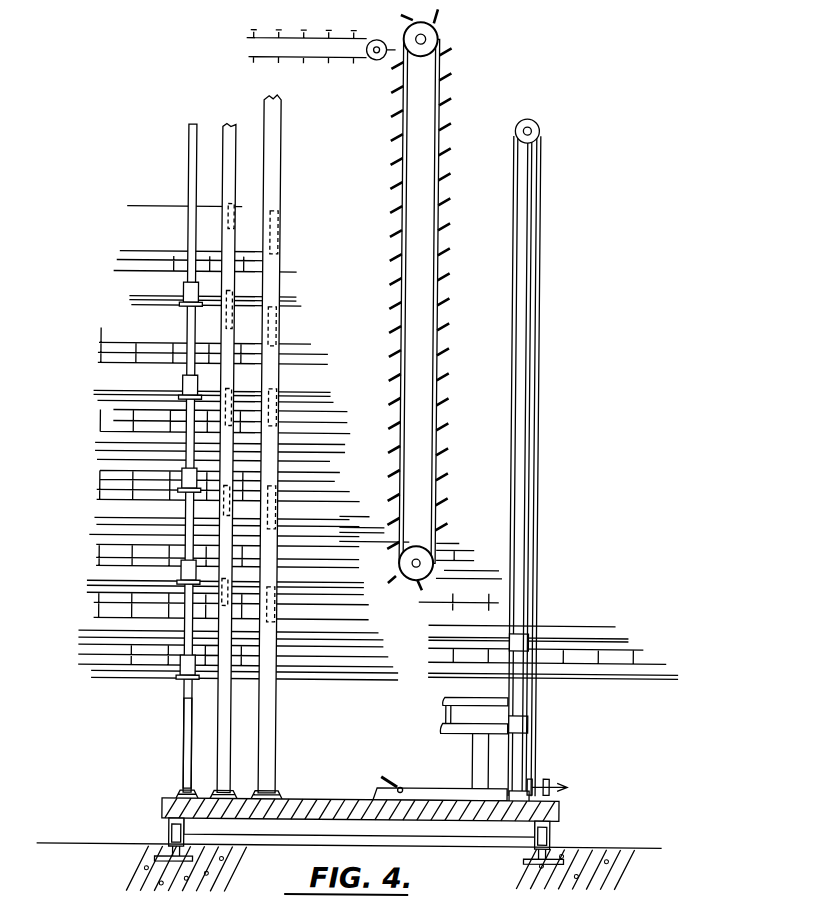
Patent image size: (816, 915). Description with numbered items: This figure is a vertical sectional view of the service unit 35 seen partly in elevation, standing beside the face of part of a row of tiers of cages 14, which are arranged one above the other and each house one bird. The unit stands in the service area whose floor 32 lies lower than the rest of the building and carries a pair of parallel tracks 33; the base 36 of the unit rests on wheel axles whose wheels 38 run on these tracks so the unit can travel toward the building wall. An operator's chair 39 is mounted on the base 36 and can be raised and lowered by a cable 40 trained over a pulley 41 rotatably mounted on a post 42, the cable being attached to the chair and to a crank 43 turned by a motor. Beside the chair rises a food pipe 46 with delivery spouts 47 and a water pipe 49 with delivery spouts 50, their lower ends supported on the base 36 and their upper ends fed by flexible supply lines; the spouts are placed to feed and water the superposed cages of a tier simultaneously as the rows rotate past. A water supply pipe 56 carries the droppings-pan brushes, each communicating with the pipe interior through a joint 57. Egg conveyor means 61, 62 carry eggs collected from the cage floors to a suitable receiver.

The cages 14 is at (98, 396).
The floor 32 is at (112, 846).
The tracks 33 is at (160, 857).
The service unit 35 is at (178, 744).
The base 36 is at (351, 800).
The wheels 38 is at (170, 834).
The operator's chair 39 is at (442, 726).
The cable 40 is at (538, 342).
The pulley 41 is at (537, 125).
The post 42 is at (530, 304).
The crank 43 is at (552, 782).
The food pipe 46 is at (279, 160).
The delivery spout 47 is at (280, 234).
The water pipe 49 is at (228, 177).
The delivery spout 50 is at (228, 208).
The water supply pipe 56 is at (188, 186).
The joint 57 is at (182, 293).
The egg conveyor means 61 is at (446, 76).
The egg conveyor means 62 is at (277, 40).